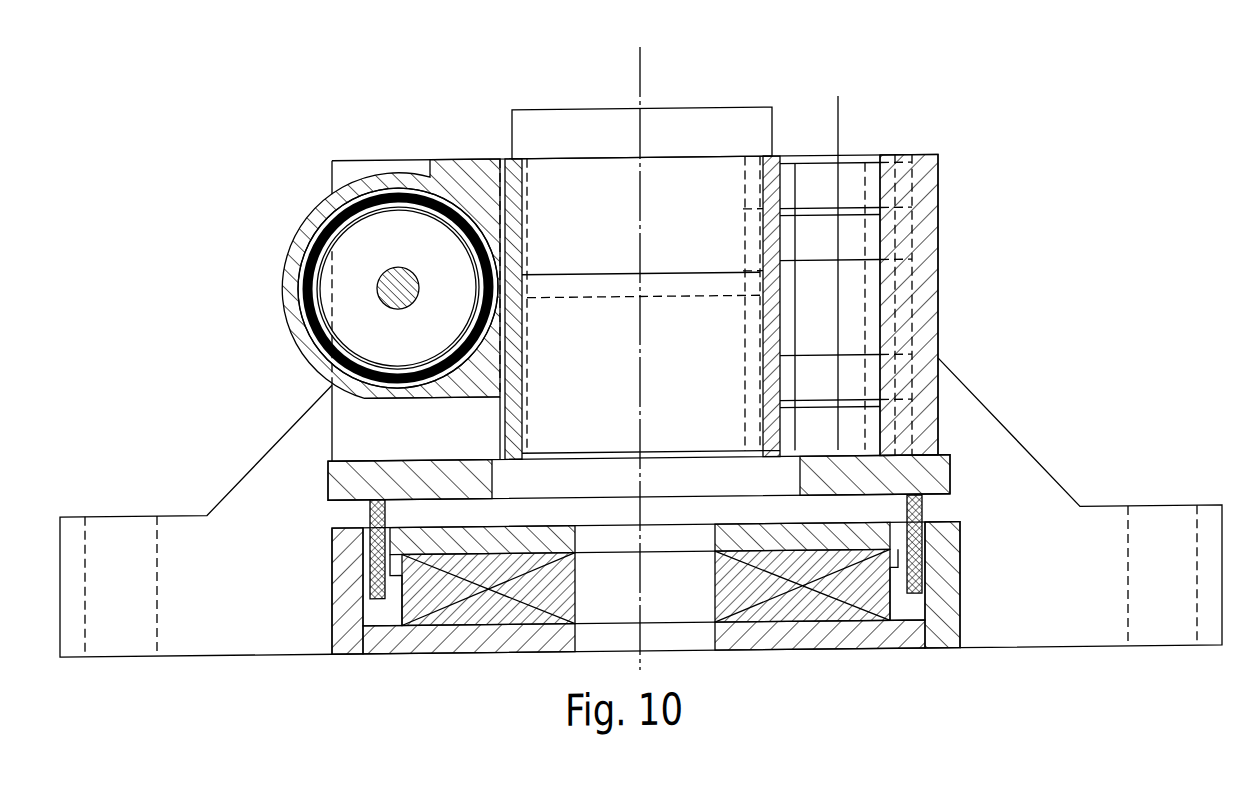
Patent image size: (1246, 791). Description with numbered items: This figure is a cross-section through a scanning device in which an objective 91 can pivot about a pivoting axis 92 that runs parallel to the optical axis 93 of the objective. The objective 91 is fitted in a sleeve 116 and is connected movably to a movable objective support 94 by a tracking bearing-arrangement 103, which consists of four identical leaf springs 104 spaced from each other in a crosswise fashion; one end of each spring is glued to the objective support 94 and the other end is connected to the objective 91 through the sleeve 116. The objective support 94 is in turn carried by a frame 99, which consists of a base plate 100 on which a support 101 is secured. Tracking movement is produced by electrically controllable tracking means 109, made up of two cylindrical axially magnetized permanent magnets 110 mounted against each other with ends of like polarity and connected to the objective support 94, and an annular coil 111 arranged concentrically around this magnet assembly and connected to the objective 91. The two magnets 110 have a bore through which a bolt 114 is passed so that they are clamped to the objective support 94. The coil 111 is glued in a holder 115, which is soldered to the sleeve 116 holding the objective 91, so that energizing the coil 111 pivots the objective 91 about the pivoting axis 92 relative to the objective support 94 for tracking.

The objective 91 is at (691, 133).
The pivoting axis 92 is at (840, 123).
The optical axis 93 is at (640, 142).
The movable objective support 94 is at (355, 480).
The frame 99 is at (269, 420).
The base plate 100 is at (758, 649).
The support 101 is at (1022, 479).
The tracking bearing-arrangement 103 is at (900, 145).
The leaf springs 104 is at (818, 239).
The electrically controllable tracking means 109 is at (311, 193).
The cylindrical axially magnetized permanent magnets 110 is at (420, 224).
The annular coil 111 is at (396, 194).
The bolt 114 is at (390, 288).
The holder 115 is at (441, 382).
The sleeve 116 is at (512, 426).